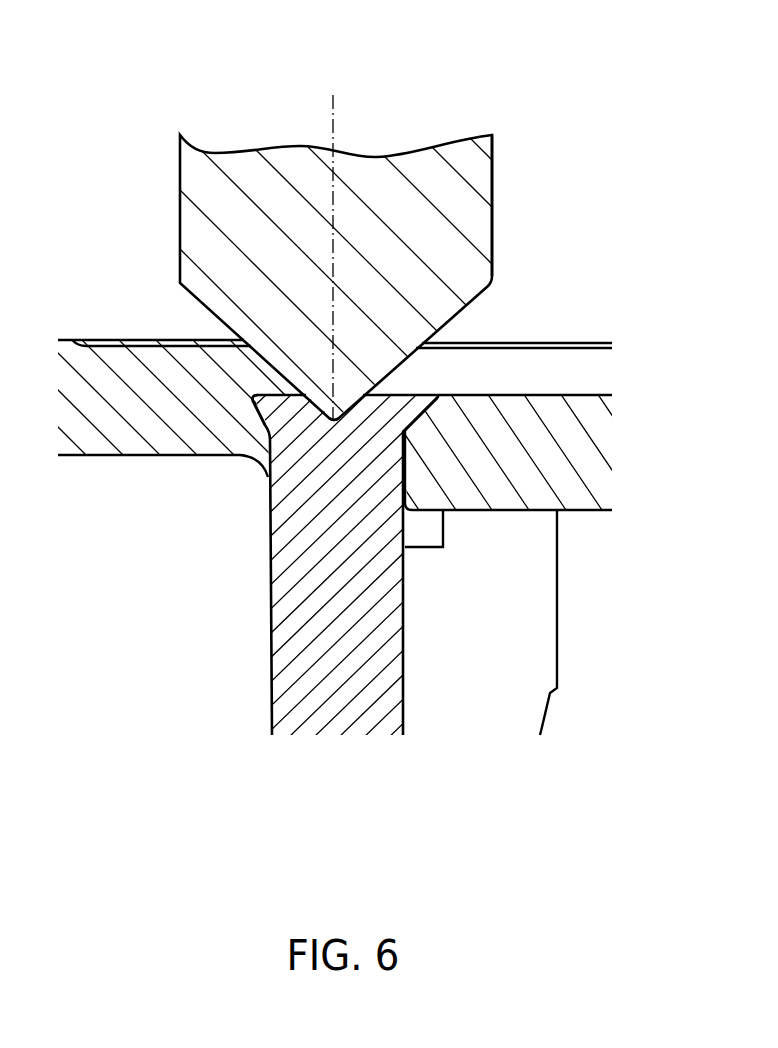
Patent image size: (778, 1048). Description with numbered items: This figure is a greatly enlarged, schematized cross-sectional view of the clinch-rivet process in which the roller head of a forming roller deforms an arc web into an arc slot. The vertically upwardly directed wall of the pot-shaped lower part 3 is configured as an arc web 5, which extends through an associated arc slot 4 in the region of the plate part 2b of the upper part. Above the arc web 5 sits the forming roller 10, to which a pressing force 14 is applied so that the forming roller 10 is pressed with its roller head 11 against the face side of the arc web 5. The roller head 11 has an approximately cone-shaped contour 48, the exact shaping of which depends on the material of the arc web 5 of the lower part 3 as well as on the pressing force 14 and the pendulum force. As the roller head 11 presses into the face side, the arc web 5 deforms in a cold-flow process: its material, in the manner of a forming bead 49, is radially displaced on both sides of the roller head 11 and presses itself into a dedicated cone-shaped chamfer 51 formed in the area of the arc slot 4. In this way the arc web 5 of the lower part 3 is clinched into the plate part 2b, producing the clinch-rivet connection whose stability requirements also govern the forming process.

The pressing force 14 is at (227, 82).
The forming roller 10 is at (253, 177).
The cone-shaped contour 48 is at (335, 414).
The roller head 11 is at (453, 188).
The plate part 2b is at (577, 410).
The forming bead 49 is at (432, 410).
The arc slot 4 is at (522, 512).
The lower part 3 is at (492, 625).
The cone-shaped chamfer 51 is at (257, 398).
The arc web 5 is at (337, 660).